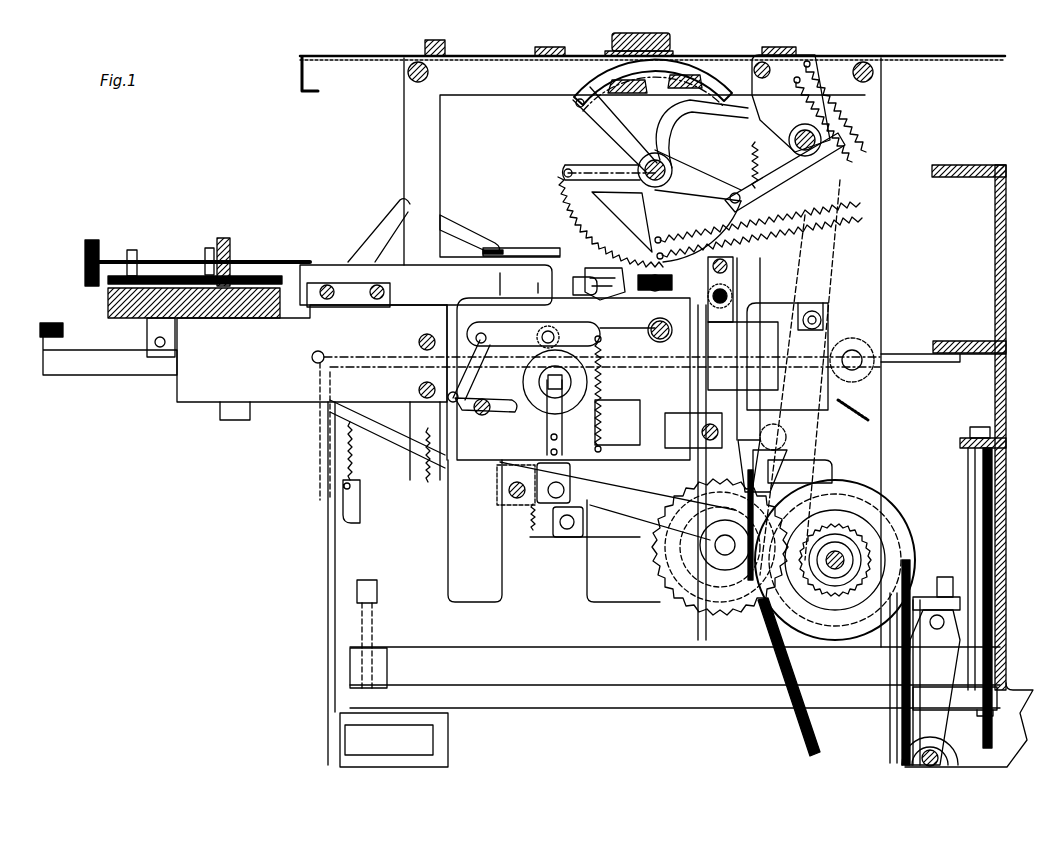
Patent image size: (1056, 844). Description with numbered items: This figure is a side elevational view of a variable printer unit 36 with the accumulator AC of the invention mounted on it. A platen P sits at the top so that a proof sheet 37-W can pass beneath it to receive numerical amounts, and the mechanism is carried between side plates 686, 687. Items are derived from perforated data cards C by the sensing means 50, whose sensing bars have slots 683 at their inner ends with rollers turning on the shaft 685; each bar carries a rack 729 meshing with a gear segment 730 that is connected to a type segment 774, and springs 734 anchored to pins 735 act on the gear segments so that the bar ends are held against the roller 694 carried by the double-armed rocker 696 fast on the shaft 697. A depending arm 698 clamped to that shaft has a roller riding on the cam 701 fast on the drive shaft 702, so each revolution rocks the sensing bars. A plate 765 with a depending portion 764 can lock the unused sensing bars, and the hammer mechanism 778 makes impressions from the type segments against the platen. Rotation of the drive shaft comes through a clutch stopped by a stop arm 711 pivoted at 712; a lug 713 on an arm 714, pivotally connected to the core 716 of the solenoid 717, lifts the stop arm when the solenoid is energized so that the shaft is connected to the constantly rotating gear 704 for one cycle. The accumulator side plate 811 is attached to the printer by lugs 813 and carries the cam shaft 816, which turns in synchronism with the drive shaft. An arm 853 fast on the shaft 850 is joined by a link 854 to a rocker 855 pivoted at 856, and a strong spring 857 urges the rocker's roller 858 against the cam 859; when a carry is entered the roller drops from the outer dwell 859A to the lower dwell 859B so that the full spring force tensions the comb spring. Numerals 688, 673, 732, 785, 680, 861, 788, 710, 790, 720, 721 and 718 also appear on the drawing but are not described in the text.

The proof sheet 37-W is at (672, 52).
The platen P is at (646, 33).
The pivot stud 688 is at (406, 78).
The side plate 687 is at (409, 101).
The variable printer unit 36 is at (398, 127).
The side plate 686 is at (881, 236).
The sensing means 50 is at (196, 262).
The carriage bar 673 is at (246, 286).
The perforated data card C is at (268, 286).
The plate 765 is at (520, 250).
The depending portion 764 is at (556, 250).
The type segment 774 is at (598, 96).
The hammer mechanism 778 is at (700, 112).
The pivot 732 is at (672, 170).
The gear segment 730 is at (582, 210).
The rack 729 is at (606, 258).
The link 785 is at (822, 130).
The pin 735 is at (868, 218).
The spring 734 is at (752, 240).
The pawl 680 is at (660, 262).
The slot 683 is at (612, 292).
The shaft 685 is at (656, 292).
The side plate 811 is at (626, 458).
The rocker 855 is at (523, 330).
The roller 858 is at (550, 330).
The lower dwell 859B is at (516, 337).
The pivot 856 is at (657, 344).
The link 854 is at (470, 380).
The shaft 850 is at (490, 408).
The arm 853 is at (460, 410).
The cam shaft 816 is at (545, 386).
The bar 861 is at (548, 438).
The spring 857 is at (600, 392).
The cam 859 is at (600, 414).
The outer dwell 859A is at (600, 430).
The lug 813 is at (665, 418).
The core 716 is at (740, 406).
The solenoid 717 is at (740, 385).
The roller 694 is at (738, 298).
The double-armed rocker 696 is at (778, 380).
The shaft 697 is at (778, 400).
The pivot 788 is at (862, 358).
The depending arm 698 is at (815, 466).
The lever 710 is at (800, 488).
The drive shaft 702 is at (680, 612).
The lug 713 is at (745, 524).
The gear 704 is at (722, 556).
The pawl 790 is at (712, 606).
The cam 701 is at (745, 590).
The wheel 720 is at (882, 540).
The ratchet 721 is at (845, 572).
The arm 714 is at (735, 493).
The stop arm 711 is at (630, 535).
The pivot 712 is at (566, 530).
The spring 718 is at (530, 520).
The accumulator AC is at (463, 325).